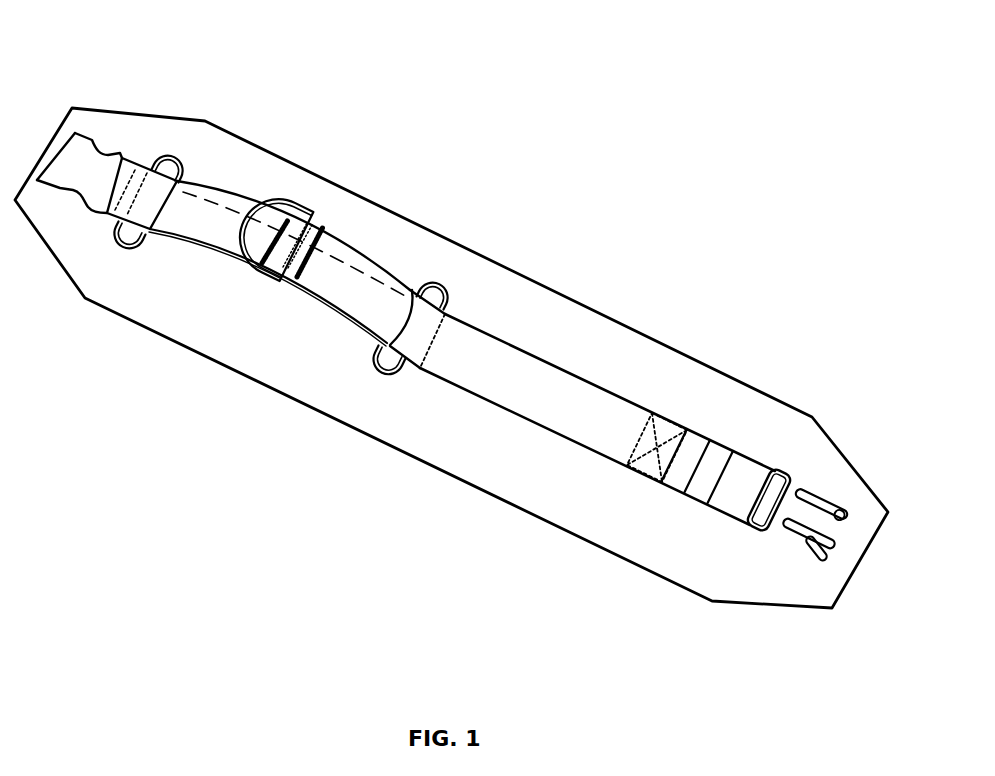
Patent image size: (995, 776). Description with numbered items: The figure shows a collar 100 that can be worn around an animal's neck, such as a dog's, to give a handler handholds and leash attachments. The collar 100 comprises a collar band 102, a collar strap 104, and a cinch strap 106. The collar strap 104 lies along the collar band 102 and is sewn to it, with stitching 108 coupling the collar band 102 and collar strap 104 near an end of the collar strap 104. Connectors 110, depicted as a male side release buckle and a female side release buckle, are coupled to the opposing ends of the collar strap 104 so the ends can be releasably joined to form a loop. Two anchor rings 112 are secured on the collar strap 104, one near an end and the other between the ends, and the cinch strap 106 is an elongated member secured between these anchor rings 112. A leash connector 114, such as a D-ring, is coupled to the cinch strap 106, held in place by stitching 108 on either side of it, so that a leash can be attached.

The collar 100 is at (451, 359).
The collar band 102 is at (175, 313).
The collar strap 104 is at (558, 397).
The cinch strap 106 is at (349, 253).
The stitching 108 is at (322, 227).
The connector 110 is at (73, 153).
The anchor ring 112 is at (166, 158).
The leash connector 114 is at (283, 197).